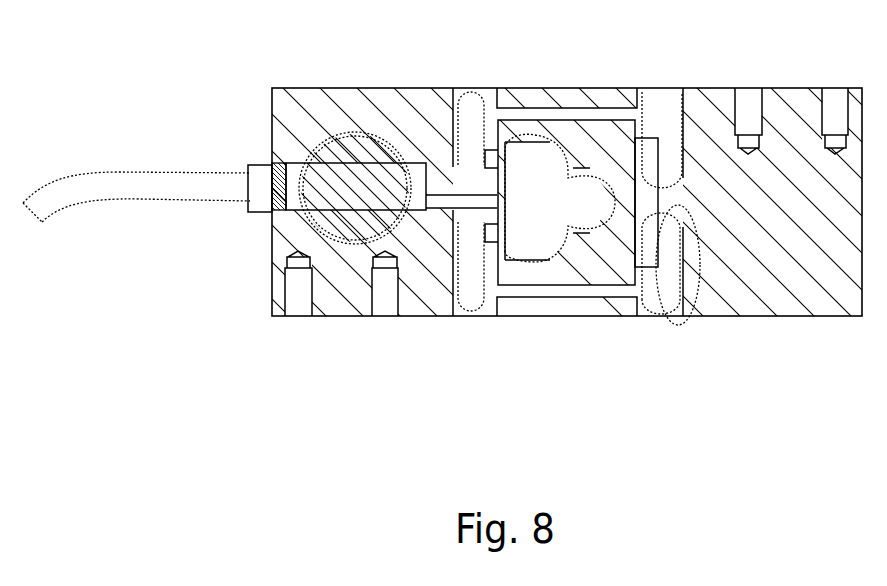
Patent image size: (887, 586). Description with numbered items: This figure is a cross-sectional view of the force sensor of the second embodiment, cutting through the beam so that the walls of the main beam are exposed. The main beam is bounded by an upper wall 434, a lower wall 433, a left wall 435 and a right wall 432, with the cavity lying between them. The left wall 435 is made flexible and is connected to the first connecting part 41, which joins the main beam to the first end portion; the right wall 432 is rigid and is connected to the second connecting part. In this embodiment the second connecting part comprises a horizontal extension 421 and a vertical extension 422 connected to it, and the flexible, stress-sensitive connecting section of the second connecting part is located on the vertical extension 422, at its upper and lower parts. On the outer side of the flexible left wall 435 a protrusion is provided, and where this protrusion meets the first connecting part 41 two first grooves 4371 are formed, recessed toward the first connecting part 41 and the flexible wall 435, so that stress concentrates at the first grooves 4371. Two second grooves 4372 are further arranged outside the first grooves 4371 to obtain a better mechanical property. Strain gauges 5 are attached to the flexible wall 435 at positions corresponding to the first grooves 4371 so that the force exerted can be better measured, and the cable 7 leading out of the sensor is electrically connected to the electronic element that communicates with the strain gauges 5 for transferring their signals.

The cable 7 is at (218, 190).
The first connecting part 41 is at (490, 192).
The second grooves 4372 is at (472, 230).
The first grooves 4371 is at (497, 160).
The upper wall 434 is at (572, 130).
The right wall 432 is at (672, 190).
The left wall 435 is at (470, 250).
The strain gauges 5 is at (540, 265).
The lower wall 433 is at (565, 255).
The horizontal extension 421 is at (670, 195).
The vertical extension 422 is at (640, 300).